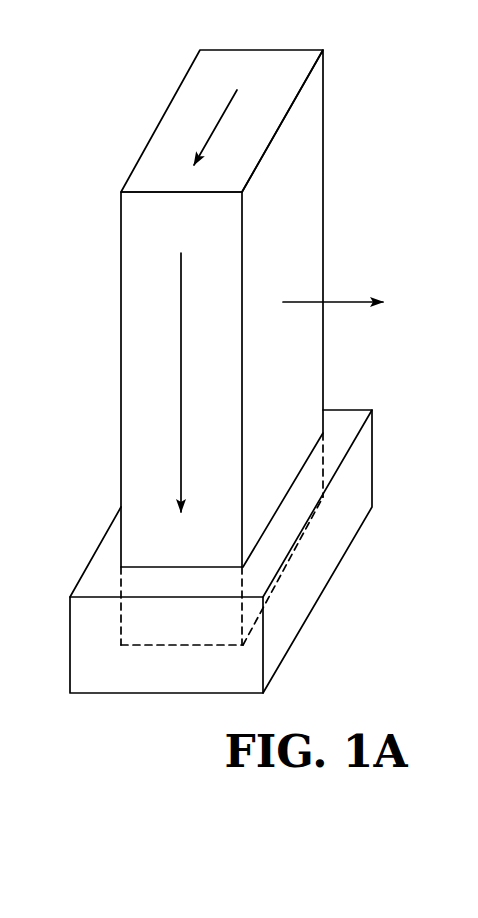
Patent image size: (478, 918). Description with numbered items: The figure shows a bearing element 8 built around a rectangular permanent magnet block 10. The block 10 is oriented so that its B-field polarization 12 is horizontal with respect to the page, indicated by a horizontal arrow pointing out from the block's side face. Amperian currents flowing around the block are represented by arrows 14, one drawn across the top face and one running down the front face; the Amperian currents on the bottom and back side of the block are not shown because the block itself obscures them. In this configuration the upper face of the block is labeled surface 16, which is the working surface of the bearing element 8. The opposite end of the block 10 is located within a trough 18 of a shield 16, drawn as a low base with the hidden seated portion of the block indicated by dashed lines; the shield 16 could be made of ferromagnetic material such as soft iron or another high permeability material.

The bearing element 8 is at (364, 76).
The rectangular permanent magnet block 10 is at (325, 205).
The B-field polarization 12 is at (340, 302).
The arrows representing Amperian currents 14 is at (210, 132).
The working surface / shield 16 is at (277, 65).
The trough 18 is at (177, 648).